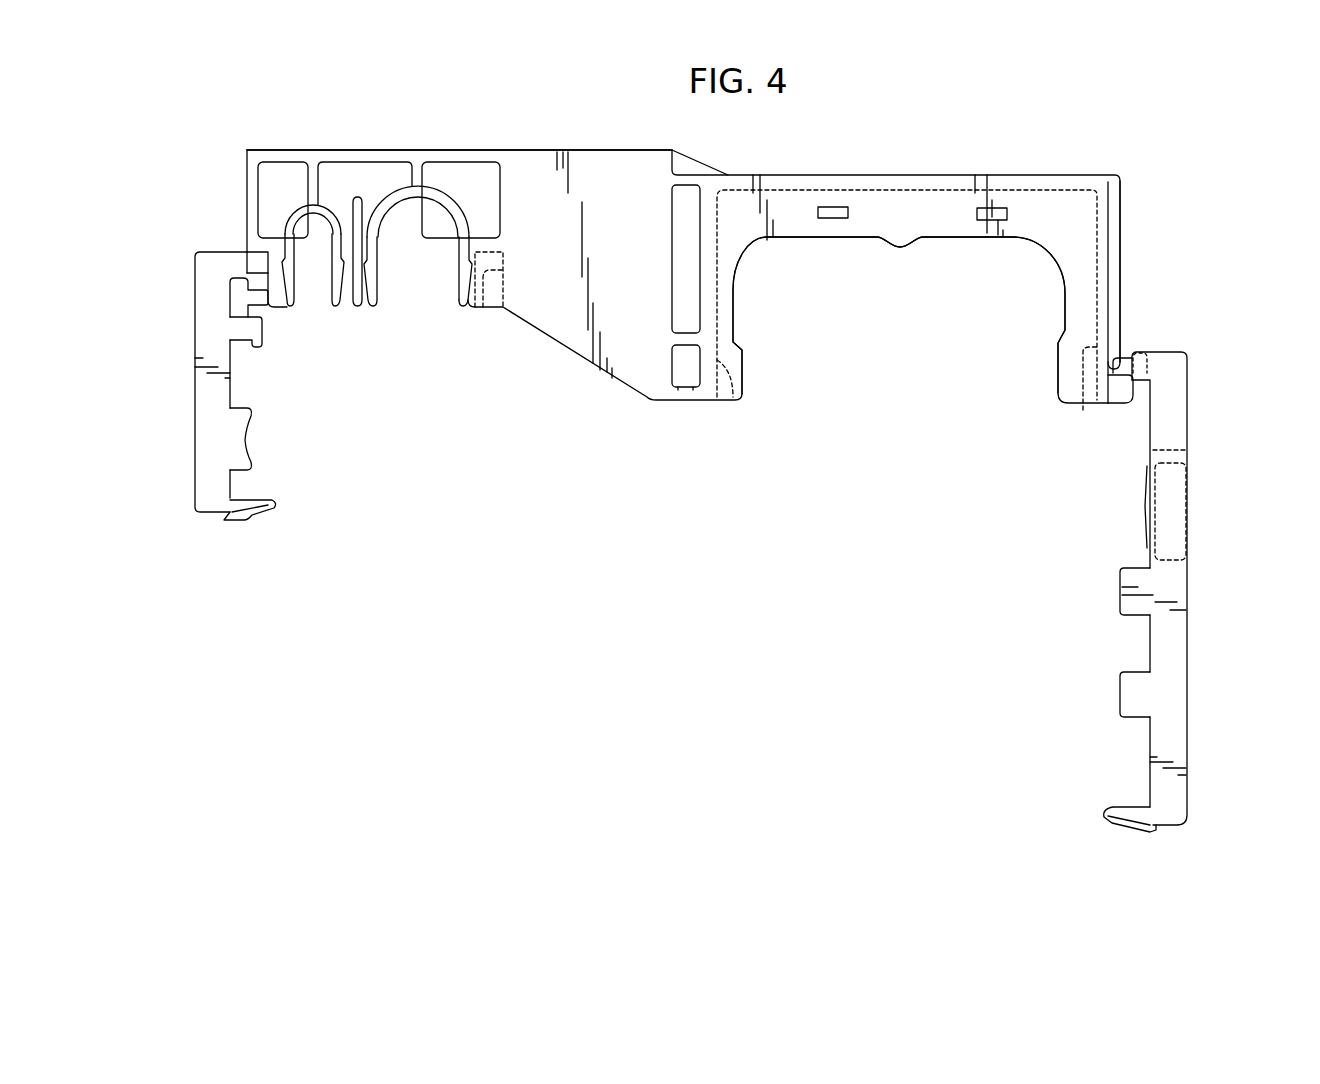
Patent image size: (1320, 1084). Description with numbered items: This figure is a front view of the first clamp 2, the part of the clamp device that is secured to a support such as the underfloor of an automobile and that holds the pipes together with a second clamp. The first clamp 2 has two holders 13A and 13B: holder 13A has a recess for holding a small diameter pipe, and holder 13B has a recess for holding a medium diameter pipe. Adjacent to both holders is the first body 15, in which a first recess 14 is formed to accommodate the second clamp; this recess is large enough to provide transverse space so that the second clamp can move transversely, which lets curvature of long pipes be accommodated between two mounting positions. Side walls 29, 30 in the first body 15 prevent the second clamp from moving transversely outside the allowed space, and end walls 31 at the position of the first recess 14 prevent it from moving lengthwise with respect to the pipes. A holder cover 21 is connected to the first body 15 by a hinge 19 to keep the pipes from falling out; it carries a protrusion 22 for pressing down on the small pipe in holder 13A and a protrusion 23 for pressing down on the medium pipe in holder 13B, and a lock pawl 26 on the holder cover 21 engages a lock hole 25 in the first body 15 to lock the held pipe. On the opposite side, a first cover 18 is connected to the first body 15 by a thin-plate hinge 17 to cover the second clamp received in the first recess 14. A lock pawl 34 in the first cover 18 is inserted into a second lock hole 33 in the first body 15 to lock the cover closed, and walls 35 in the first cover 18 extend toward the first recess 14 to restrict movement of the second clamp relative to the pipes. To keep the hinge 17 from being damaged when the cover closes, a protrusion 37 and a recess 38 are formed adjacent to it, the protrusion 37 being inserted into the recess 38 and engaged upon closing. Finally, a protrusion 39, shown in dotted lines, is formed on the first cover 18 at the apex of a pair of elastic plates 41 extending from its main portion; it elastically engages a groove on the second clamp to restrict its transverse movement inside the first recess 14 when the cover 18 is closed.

The first clamp 2 is at (597, 400).
The holder 13A is at (333, 232).
The holder 13B is at (417, 232).
The first recess 14 is at (880, 318).
The first body 15 is at (587, 150).
The hinge 17 is at (1121, 358).
The first cover 18 is at (1172, 651).
The hinge 19 is at (262, 272).
The holder cover 21 is at (203, 460).
The protrusion 22 is at (262, 330).
The protrusion 23 is at (250, 435).
The lock hole 25 is at (490, 310).
The lock pawl 26 is at (250, 518).
The side wall 29 is at (735, 400).
The side wall 30 is at (1083, 410).
The end wall 31 is at (953, 245).
The second lock hole 33 is at (692, 392).
The lock pawl 34 is at (1128, 833).
The walls 35 is at (1123, 602).
The protrusion 37 is at (1118, 404).
The recess 38 is at (1140, 356).
The protrusion 39 is at (1147, 500).
The elastic plates 41 is at (1188, 480).